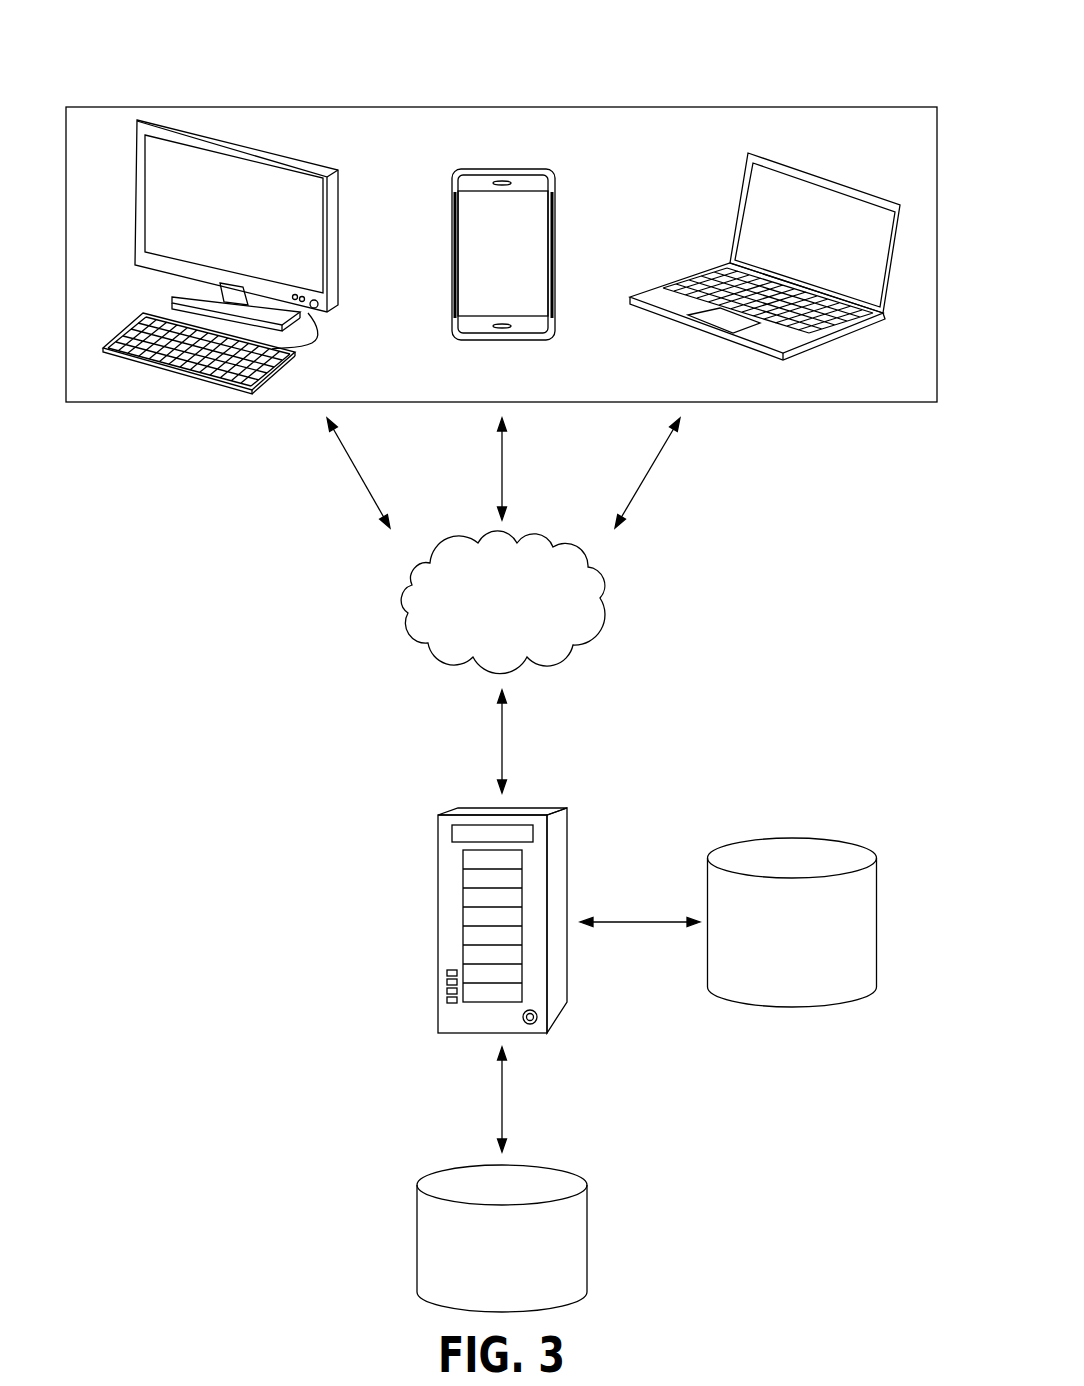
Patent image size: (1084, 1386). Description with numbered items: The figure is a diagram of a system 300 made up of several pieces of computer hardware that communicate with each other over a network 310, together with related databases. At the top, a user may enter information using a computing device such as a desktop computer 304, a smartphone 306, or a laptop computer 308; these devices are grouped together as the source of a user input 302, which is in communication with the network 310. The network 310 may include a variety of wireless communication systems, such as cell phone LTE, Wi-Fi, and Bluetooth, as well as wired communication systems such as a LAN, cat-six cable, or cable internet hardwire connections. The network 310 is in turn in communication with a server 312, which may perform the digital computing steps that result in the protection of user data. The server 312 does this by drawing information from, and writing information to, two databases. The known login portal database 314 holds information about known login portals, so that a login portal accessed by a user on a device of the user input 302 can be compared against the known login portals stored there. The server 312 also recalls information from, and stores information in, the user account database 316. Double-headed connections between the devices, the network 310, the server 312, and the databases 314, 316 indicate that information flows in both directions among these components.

The system 300 is at (208, 82).
The source of a user input 302 is at (857, 107).
The desktop computer 304 is at (340, 185).
The smartphone 306 is at (555, 248).
The laptop computer 308 is at (740, 190).
The network 310 is at (602, 613).
The server 312 is at (438, 932).
The known login portal database 314 is at (792, 832).
The user account database 316 is at (587, 1222).